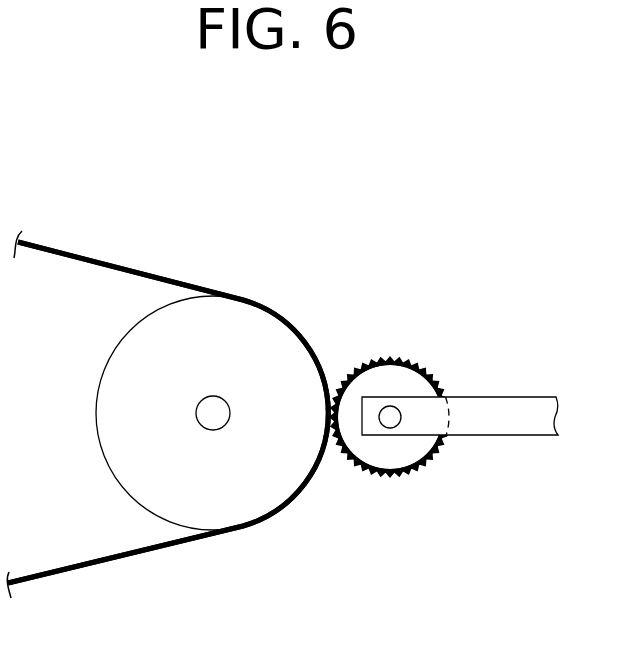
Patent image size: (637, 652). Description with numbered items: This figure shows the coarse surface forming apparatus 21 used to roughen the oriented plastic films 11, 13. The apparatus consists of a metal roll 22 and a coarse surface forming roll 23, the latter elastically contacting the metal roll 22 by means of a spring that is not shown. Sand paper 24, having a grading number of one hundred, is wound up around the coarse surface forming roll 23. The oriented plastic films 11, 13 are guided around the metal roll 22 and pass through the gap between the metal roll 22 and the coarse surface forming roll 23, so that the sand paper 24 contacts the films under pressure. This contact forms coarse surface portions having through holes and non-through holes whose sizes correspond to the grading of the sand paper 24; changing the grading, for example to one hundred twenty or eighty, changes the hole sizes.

The oriented plastic film 11 is at (125, 266).
The oriented plastic film 13 is at (168, 412).
The coarse surface forming apparatus 21 is at (312, 293).
The metal roll 22 is at (115, 394).
The coarse surface forming roll 23 is at (408, 478).
The sand paper 24 is at (380, 354).